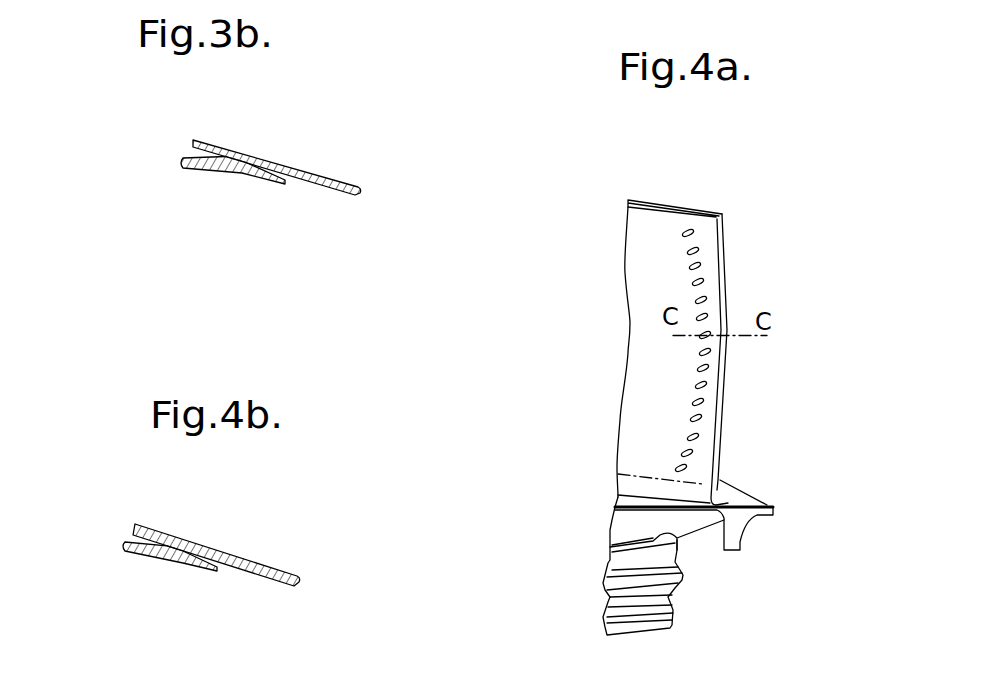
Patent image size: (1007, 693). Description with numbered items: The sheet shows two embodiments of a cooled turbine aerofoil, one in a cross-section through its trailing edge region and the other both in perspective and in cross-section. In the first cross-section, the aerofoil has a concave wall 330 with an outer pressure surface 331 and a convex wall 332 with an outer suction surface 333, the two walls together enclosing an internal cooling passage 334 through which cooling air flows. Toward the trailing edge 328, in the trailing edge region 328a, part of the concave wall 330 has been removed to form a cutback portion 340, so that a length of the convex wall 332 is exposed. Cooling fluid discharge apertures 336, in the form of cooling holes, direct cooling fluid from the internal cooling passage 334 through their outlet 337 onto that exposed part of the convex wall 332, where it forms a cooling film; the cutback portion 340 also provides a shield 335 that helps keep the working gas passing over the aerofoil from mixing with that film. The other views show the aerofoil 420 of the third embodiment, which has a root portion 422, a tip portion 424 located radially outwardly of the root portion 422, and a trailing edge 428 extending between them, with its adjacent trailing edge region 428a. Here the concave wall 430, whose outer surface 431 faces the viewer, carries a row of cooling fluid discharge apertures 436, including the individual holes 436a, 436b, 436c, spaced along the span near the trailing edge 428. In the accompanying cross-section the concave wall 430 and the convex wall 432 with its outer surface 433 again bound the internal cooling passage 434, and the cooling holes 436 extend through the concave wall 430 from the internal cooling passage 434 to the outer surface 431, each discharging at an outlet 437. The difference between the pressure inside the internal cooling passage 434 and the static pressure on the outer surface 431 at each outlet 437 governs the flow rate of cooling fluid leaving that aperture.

In FIG. 3b, the trailing edge 328 is at (361, 186).
In FIG. 3b, the trailing edge region 328a is at (356, 201).
In FIG. 3b, the concave wall 330 is at (187, 163).
In FIG. 3b, the outer surface of concave wall 331 is at (200, 167).
In FIG. 3b, the convex wall 332 is at (202, 140).
In FIG. 3b, the outer surface of convex wall 333 is at (229, 157).
In FIG. 3b, the internal cooling passage 334 is at (193, 145).
In FIG. 3b, the shield 335 is at (329, 198).
In FIG. 3b, the cooling fluid discharge apertures 336 is at (240, 170).
In FIG. 3b, the outlet 337 is at (287, 184).
In FIG. 3b, the cutback portion 340 is at (313, 193).
In FIG. 4a, the aerofoil 420 is at (750, 164).
In FIG. 4a, the root portion 422 is at (623, 482).
In FIG. 4a, the tip portion 424 is at (660, 200).
In FIG. 4b, the trailing edge 428 is at (297, 575).
In FIG. 4a, the trailing edge 428 is at (727, 382).
In FIG. 4b, the trailing edge region 428a is at (285, 591).
In FIG. 4a, the trailing edge region 428a is at (702, 204).
In FIG. 4b, the concave wall 430 is at (130, 550).
In FIG. 4a, the concave wall 430 is at (638, 248).
In FIG. 4b, the outer surface of concave wall 431 is at (155, 557).
In FIG. 4a, the outer surface of concave wall 431 is at (638, 342).
In FIG. 4b, the convex wall 432 is at (158, 523).
In FIG. 4a, the convex wall 432 is at (635, 197).
In FIG. 4b, the outer surface of convex wall 433 is at (222, 547).
In FIG. 4b, the internal cooling passage 434 is at (131, 529).
In FIG. 4b, the cooling fluid discharge apertures 436 is at (183, 557).
In FIG. 4a, the cooling fluid discharge apertures 436 is at (682, 453).
In FIG. 4a, the cooling fluid discharge aperture 436a is at (685, 468).
In FIG. 4a, the cooling fluid discharge aperture 436b is at (707, 348).
In FIG. 4a, the cooling fluid discharge aperture 436c is at (690, 232).
In FIG. 4b, the outlet 437 is at (243, 577).